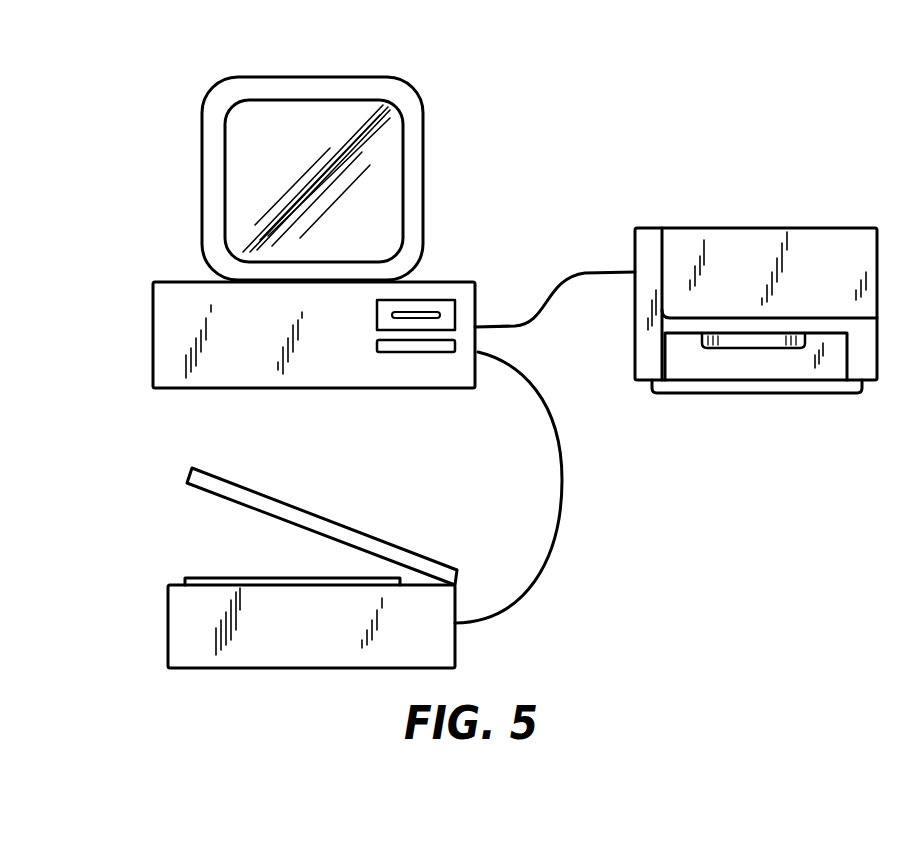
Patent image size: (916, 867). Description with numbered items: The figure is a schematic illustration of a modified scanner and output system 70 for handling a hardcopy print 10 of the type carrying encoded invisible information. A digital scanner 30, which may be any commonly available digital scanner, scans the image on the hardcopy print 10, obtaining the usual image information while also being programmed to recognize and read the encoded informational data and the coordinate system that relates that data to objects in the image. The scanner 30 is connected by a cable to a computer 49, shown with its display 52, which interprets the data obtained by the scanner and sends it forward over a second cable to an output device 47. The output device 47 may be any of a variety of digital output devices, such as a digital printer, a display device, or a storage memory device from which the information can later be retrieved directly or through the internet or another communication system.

The hardcopy print 10 is at (215, 577).
The digital scanner 30 is at (172, 638).
The output device 47 is at (773, 228).
The computer 49 is at (153, 343).
The display monitor 52 is at (410, 128).
The system 70 is at (562, 81).